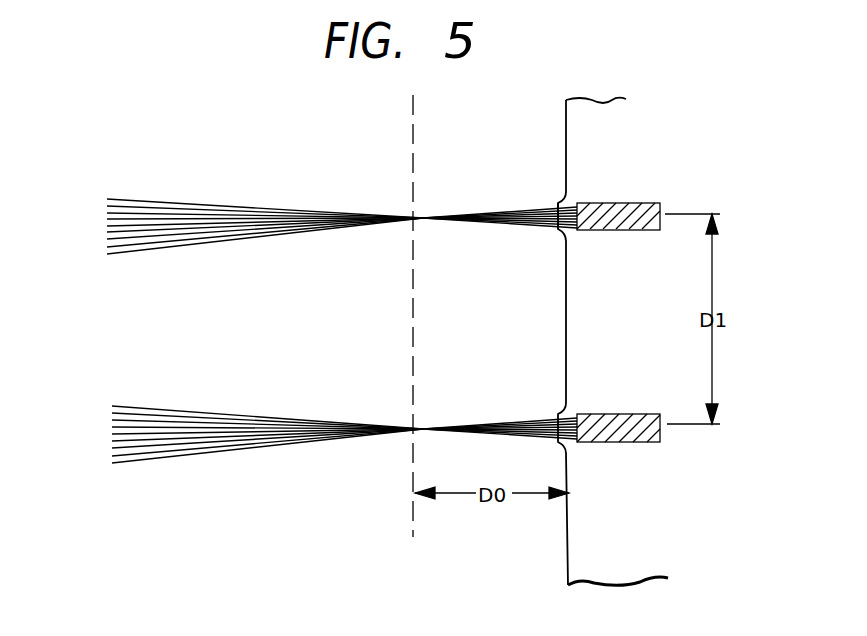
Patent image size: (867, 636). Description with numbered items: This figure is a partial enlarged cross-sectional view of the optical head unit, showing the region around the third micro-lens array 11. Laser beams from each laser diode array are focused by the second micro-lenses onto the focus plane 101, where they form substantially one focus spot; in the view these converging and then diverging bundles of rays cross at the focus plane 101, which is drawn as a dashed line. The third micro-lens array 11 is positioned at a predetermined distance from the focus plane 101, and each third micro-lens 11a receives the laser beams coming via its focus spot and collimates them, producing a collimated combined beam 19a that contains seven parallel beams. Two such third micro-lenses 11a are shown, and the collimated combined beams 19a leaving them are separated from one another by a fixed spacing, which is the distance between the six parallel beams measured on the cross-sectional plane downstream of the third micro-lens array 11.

The third micro-lens array 11 is at (586, 137).
The third micro-lens 11a is at (557, 238).
The collimated combined beam 19a is at (630, 441).
The focus plane 101 is at (412, 527).